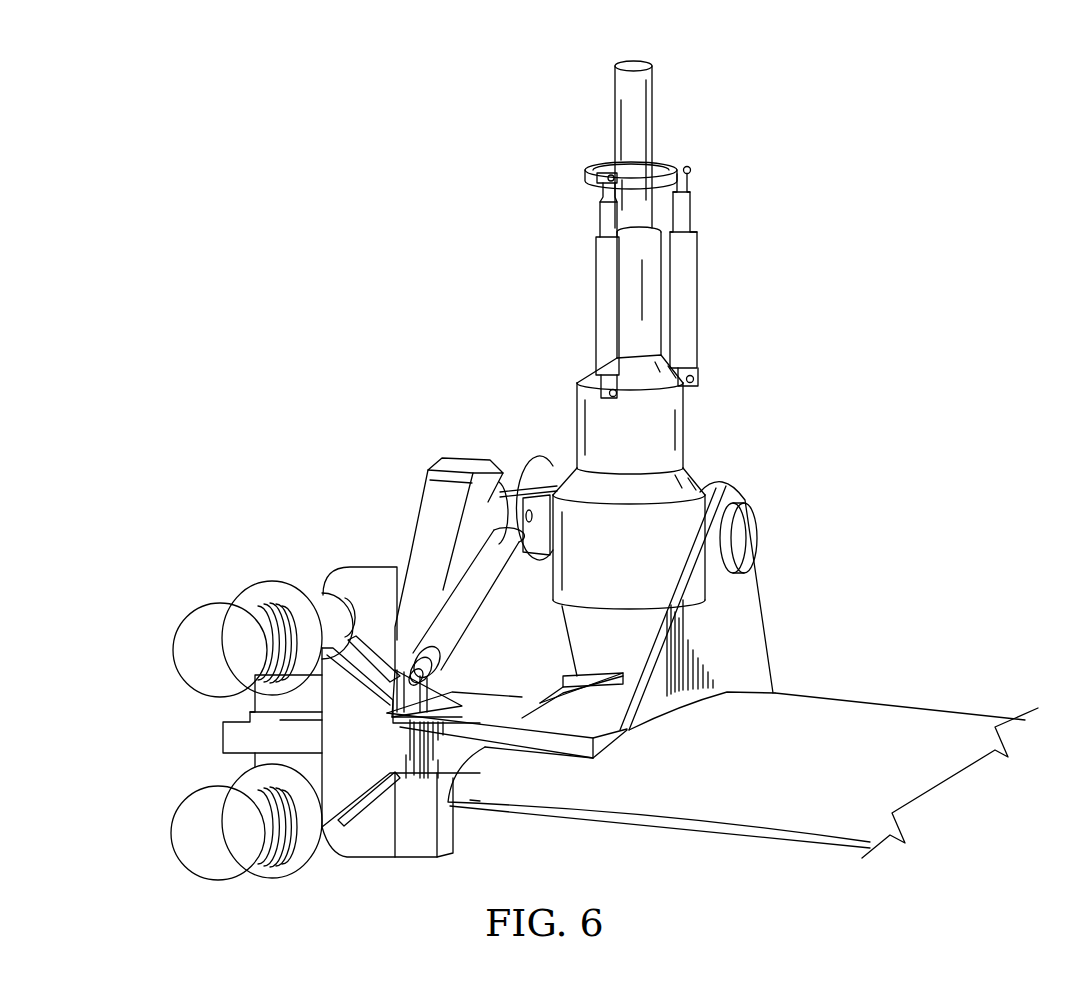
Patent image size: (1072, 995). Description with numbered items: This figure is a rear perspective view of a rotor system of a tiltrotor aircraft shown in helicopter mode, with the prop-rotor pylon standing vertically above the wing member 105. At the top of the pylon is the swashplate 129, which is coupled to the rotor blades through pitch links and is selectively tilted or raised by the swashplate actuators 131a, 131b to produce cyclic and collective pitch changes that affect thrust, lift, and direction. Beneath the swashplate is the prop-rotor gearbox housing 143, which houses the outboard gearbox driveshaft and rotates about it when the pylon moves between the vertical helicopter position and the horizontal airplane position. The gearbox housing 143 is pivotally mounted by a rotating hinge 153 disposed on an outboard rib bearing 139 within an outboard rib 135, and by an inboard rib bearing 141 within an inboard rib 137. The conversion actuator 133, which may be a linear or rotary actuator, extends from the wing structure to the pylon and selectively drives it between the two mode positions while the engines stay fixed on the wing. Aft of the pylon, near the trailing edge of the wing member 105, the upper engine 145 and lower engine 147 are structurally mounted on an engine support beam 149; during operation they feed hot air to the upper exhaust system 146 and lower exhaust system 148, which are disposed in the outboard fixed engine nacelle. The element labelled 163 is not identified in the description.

The wing member 105 is at (889, 712).
The swashplate 129 is at (592, 172).
The swashplate actuator 131a is at (700, 292).
The swashplate actuator 131b is at (597, 292).
The conversion actuator 133 is at (480, 610).
The outboard rib 135 is at (483, 455).
The inboard rib 137 is at (757, 618).
The outboard rib bearing 139 is at (490, 505).
The inboard rib bearing 141 is at (688, 528).
The prop-rotor gearbox housing 143 is at (614, 602).
The upper engine 145 is at (305, 590).
The upper exhaust system 146 is at (180, 651).
The lower engine 147 is at (325, 850).
The lower exhaust system 148 is at (178, 829).
The engine support beam 149 is at (225, 738).
The rotating hinge 153 is at (748, 528).
The piston rod 163 is at (652, 118).